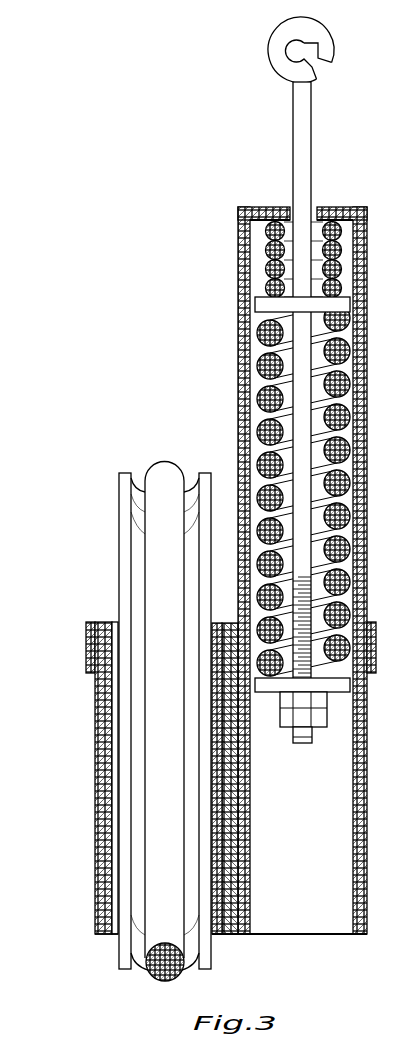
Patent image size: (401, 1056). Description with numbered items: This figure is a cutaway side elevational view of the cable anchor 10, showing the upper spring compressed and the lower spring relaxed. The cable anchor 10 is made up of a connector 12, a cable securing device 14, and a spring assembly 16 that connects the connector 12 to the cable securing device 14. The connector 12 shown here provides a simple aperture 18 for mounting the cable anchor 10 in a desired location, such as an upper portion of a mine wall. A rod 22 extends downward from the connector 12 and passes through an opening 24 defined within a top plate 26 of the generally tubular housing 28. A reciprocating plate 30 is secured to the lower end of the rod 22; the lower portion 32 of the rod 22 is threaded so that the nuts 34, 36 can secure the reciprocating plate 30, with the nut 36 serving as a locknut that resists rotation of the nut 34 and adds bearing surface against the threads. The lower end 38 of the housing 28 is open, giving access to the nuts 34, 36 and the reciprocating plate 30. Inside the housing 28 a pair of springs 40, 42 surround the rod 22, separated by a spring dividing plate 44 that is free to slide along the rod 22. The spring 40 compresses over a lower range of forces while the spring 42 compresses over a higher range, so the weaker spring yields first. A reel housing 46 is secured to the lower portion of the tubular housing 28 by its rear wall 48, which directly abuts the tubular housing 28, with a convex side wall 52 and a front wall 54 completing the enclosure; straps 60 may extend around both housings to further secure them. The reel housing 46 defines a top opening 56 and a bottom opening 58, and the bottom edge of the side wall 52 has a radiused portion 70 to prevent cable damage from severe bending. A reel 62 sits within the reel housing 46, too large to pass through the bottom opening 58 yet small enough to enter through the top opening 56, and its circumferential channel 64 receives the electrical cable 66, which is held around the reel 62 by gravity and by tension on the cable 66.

The cable anchor 10 is at (210, 138).
The connector 12 is at (328, 46).
The cable securing device 14 is at (82, 920).
The spring assembly 16 is at (165, 379).
The aperture 18 is at (288, 51).
The rod 22 is at (305, 135).
The opening 24 is at (292, 206).
The top plate 26 is at (334, 206).
The tubular housing 28 is at (246, 235).
The reciprocating plate 30 is at (339, 692).
The lower portion of the rod 32 is at (304, 742).
The nut 34 is at (286, 703).
The nut 36 is at (320, 716).
The lower end 38 is at (313, 916).
The spring 40 is at (268, 264).
The spring 42 is at (263, 372).
The spring dividing plate 44 is at (257, 304).
The reel housing 46 is at (96, 818).
The rear wall 48 is at (232, 806).
The side wall 52 is at (215, 855).
The front wall 54 is at (104, 846).
The top opening 56 is at (113, 617).
The bottom opening 58 is at (112, 946).
The straps 60 is at (89, 653).
The reel 62 is at (118, 500).
The circumferential channel 64 is at (137, 470).
The electrical cable 66 is at (177, 716).
The radiused portion 70 is at (215, 937).